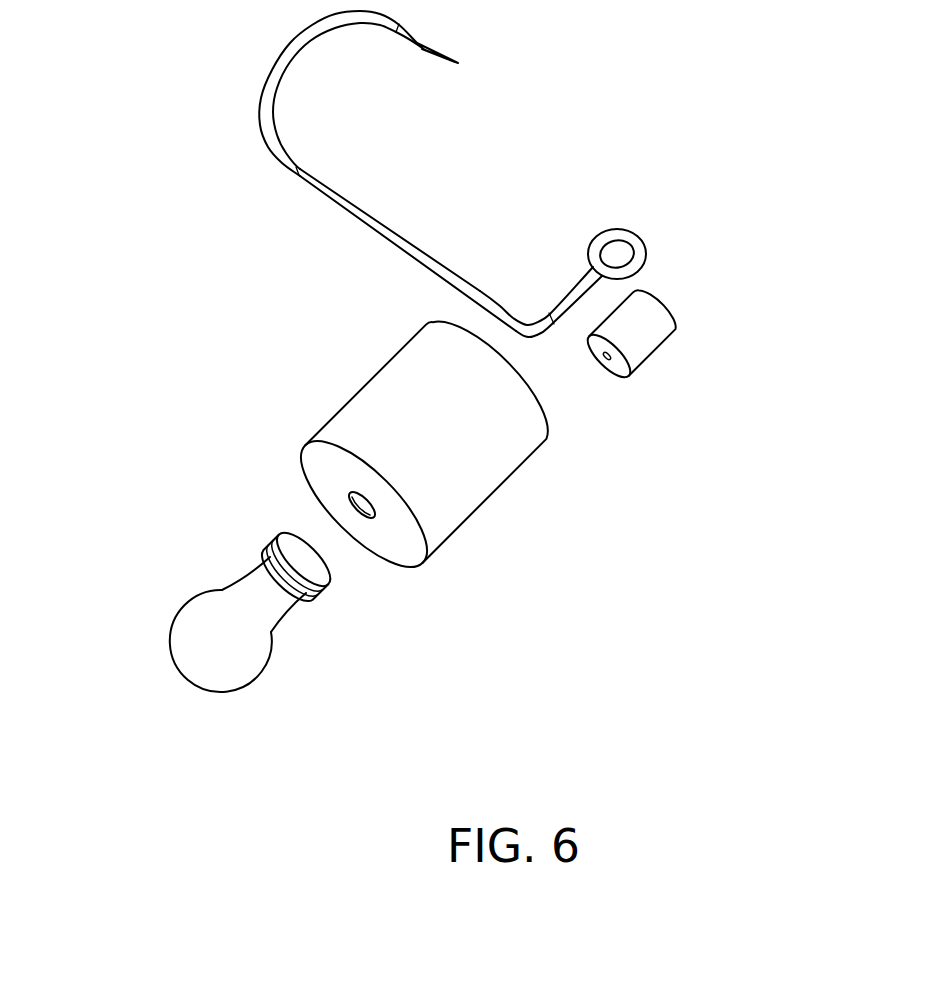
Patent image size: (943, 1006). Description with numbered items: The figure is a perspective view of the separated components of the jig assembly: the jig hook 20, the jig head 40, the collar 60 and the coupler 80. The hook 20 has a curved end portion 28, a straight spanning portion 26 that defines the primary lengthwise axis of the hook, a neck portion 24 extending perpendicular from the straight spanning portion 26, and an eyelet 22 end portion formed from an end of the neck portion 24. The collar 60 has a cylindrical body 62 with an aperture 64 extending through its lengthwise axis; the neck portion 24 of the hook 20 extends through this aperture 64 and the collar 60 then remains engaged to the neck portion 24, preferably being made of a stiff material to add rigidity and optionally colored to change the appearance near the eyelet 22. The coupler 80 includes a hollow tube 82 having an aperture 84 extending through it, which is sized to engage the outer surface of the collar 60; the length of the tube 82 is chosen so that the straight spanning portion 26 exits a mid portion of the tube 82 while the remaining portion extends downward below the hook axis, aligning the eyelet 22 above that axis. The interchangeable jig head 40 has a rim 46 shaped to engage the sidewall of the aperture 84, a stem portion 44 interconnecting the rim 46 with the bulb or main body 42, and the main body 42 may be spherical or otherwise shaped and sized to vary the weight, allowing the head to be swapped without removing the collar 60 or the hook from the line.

The jig hook 20 is at (197, 151).
The eyelet 22 is at (625, 238).
The neck portion 24 is at (577, 293).
The straight spanning portion 26 is at (372, 225).
The curved end portion 28 is at (272, 73).
The jig head 40 is at (285, 686).
The main body 42 is at (198, 637).
The stem portion 44 is at (265, 575).
The rim 46 is at (285, 543).
The collar 60 is at (696, 357).
The cylindrical body 62 is at (653, 313).
The aperture 64 is at (608, 358).
The coupler 80 is at (518, 539).
The hollow tube 82 is at (482, 465).
The aperture 84 is at (368, 514).